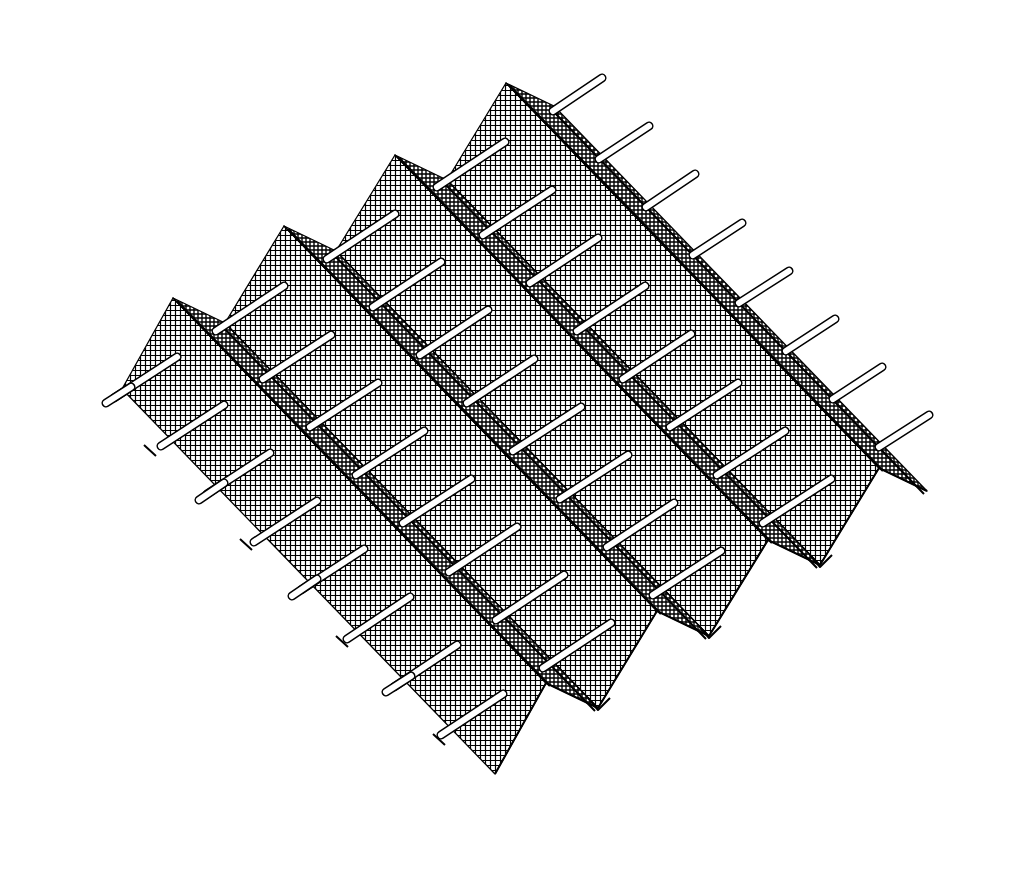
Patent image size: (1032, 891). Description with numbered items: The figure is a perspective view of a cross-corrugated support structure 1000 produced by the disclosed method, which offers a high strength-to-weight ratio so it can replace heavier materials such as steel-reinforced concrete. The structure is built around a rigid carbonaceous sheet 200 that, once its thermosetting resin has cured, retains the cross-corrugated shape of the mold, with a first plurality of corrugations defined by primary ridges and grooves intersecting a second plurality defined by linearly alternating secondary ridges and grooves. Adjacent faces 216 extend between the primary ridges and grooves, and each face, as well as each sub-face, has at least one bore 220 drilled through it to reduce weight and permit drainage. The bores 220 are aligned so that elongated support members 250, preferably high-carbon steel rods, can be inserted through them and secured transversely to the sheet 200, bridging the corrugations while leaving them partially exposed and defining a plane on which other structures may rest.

The cross-corrugated support structure 1000 is at (146, 115).
The faces 216 is at (437, 119).
The sheet 200 is at (368, 190).
The bores 220 is at (248, 262).
The support member 250 is at (563, 78).